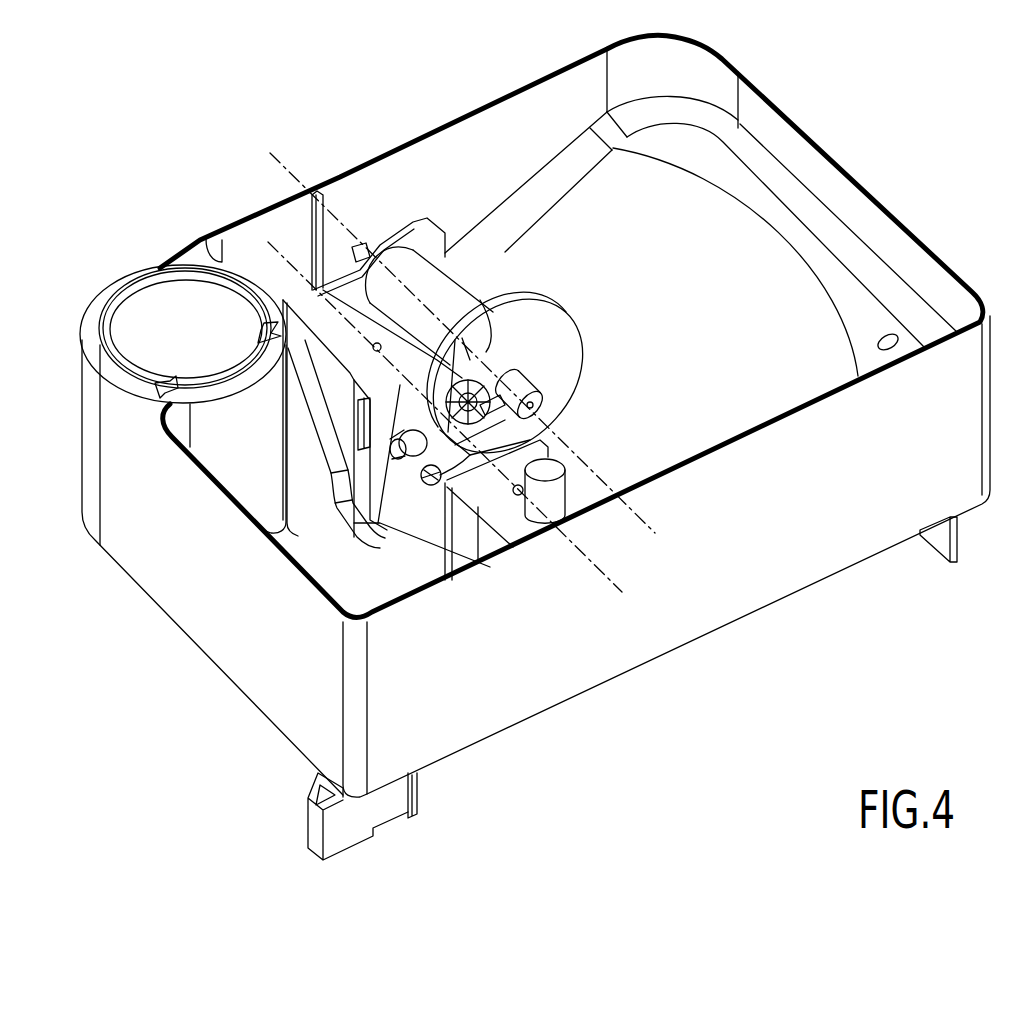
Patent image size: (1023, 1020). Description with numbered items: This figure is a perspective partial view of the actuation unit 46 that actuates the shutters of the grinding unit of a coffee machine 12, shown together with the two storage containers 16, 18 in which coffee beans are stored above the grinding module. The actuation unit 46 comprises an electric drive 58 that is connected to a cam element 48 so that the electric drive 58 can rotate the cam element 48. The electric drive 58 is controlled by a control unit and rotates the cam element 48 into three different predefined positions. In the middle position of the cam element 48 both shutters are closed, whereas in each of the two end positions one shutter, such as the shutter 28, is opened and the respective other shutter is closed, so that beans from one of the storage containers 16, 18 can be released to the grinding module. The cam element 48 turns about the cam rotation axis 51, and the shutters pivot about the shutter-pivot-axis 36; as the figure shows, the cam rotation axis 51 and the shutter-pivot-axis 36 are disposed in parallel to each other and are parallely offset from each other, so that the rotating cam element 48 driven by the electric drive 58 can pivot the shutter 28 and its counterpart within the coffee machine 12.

The coffee machine 12 is at (783, 70).
The storage container 16 is at (797, 240).
The storage container 18 is at (330, 563).
The shutter 28 is at (418, 540).
The shutter-pivot-axis 36 is at (273, 243).
The actuation unit 46 is at (508, 269).
The cam element 48 is at (568, 350).
The cam rotation axis 51 is at (268, 152).
The electric drive 58 is at (410, 268).